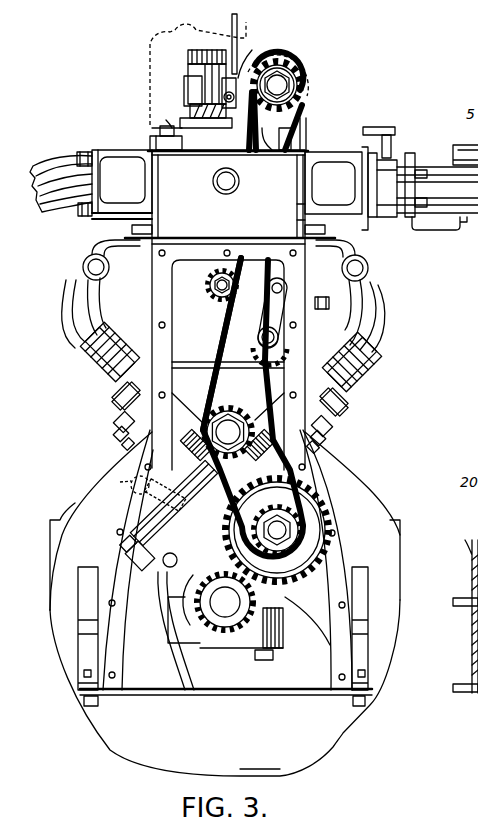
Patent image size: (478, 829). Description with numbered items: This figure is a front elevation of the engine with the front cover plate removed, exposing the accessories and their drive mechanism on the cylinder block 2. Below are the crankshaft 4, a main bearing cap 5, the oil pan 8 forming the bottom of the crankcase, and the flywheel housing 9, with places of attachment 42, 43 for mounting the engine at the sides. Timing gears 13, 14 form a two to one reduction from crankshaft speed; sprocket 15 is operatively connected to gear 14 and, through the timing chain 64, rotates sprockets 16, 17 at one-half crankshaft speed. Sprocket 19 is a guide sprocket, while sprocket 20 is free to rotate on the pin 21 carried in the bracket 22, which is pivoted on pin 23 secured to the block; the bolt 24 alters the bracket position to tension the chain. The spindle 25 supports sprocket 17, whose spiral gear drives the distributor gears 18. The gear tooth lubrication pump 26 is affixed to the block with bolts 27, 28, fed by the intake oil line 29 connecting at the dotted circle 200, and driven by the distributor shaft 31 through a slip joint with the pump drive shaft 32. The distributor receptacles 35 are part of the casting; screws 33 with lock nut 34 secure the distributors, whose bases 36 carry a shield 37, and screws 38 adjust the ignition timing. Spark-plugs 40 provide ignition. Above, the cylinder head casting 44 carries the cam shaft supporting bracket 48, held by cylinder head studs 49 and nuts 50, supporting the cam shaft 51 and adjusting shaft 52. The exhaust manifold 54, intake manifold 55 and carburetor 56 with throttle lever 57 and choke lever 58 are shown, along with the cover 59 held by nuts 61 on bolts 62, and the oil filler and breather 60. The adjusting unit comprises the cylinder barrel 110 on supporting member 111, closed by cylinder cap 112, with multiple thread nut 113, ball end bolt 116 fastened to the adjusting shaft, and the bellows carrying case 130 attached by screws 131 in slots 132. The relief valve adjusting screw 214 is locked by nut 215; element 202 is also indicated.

The cylinder block 2 is at (172, 312).
The crankshaft 4 is at (252, 618).
The main bearing cap 5 is at (278, 648).
The oil pan 8 is at (145, 742).
The flywheel housing 9 is at (70, 656).
The timing gear 13 is at (240, 612).
The timing gear 14 is at (292, 578).
The sprocket 15 is at (292, 510).
The sprocket 16 is at (300, 118).
The sprocket 17 is at (207, 405).
The distributor gears 18 is at (183, 443).
The guide sprocket 19 is at (206, 280).
The sprocket 20 is at (287, 345).
The pin 21 is at (269, 330).
The bracket 22 is at (283, 292).
The pin 23 is at (287, 287).
The bolt 24 is at (333, 290).
The spindle 25 is at (250, 396).
The gear tooth lubrication pump 26 is at (150, 512).
The bolt 27 is at (145, 466).
The bolt 28 is at (135, 540).
The intake oil line 29 is at (175, 680).
The distributor shaft 31 is at (301, 465).
The pump drive shaft 32 is at (115, 481).
The screw 33 is at (126, 444).
The lock nut 34 is at (118, 432).
The distributor receptacle 35 is at (120, 418).
The distributor base 36 is at (112, 372).
The shield 37 is at (118, 392).
The screw 38 is at (120, 402).
The spark-plug 40 is at (138, 242).
The place of attachment 42 is at (78, 625).
The place of attachment 43 is at (49, 522).
The cylinder head casting 44 is at (109, 268).
The cam shaft supporting bracket 48 is at (165, 143).
The cylinder head stud 49 is at (152, 128).
The cylinder head nut 50 is at (160, 134).
The cam shaft 51 is at (279, 86).
The adjusting shaft 52 is at (277, 60).
The exhaust manifold 54 is at (110, 173).
The intake manifold 55 is at (330, 175).
The carburetor 56 is at (437, 222).
The lever 57 is at (366, 127).
The lever 58 is at (477, 137).
The cover 59 is at (308, 57).
The oil filler and breather 60 is at (150, 42).
The nut 61 is at (238, 25).
The bolt 62 is at (252, 50).
The timing chain 64 is at (227, 330).
The cylinder barrel 110 is at (205, 72).
The supporting member 111 is at (190, 84).
The cylinder cap 112 is at (192, 58).
The multiple thread nut 113 is at (198, 110).
The ball end bolt 116 is at (224, 97).
The bellows carrying case 130 is at (186, 152).
The screw 131 is at (224, 169).
The slot 132 is at (172, 128).
The dotted circle 200 is at (145, 492).
The tappet guide 202 is at (100, 484).
The adjusting screw 214 is at (287, 204).
The nut 215 is at (287, 220).